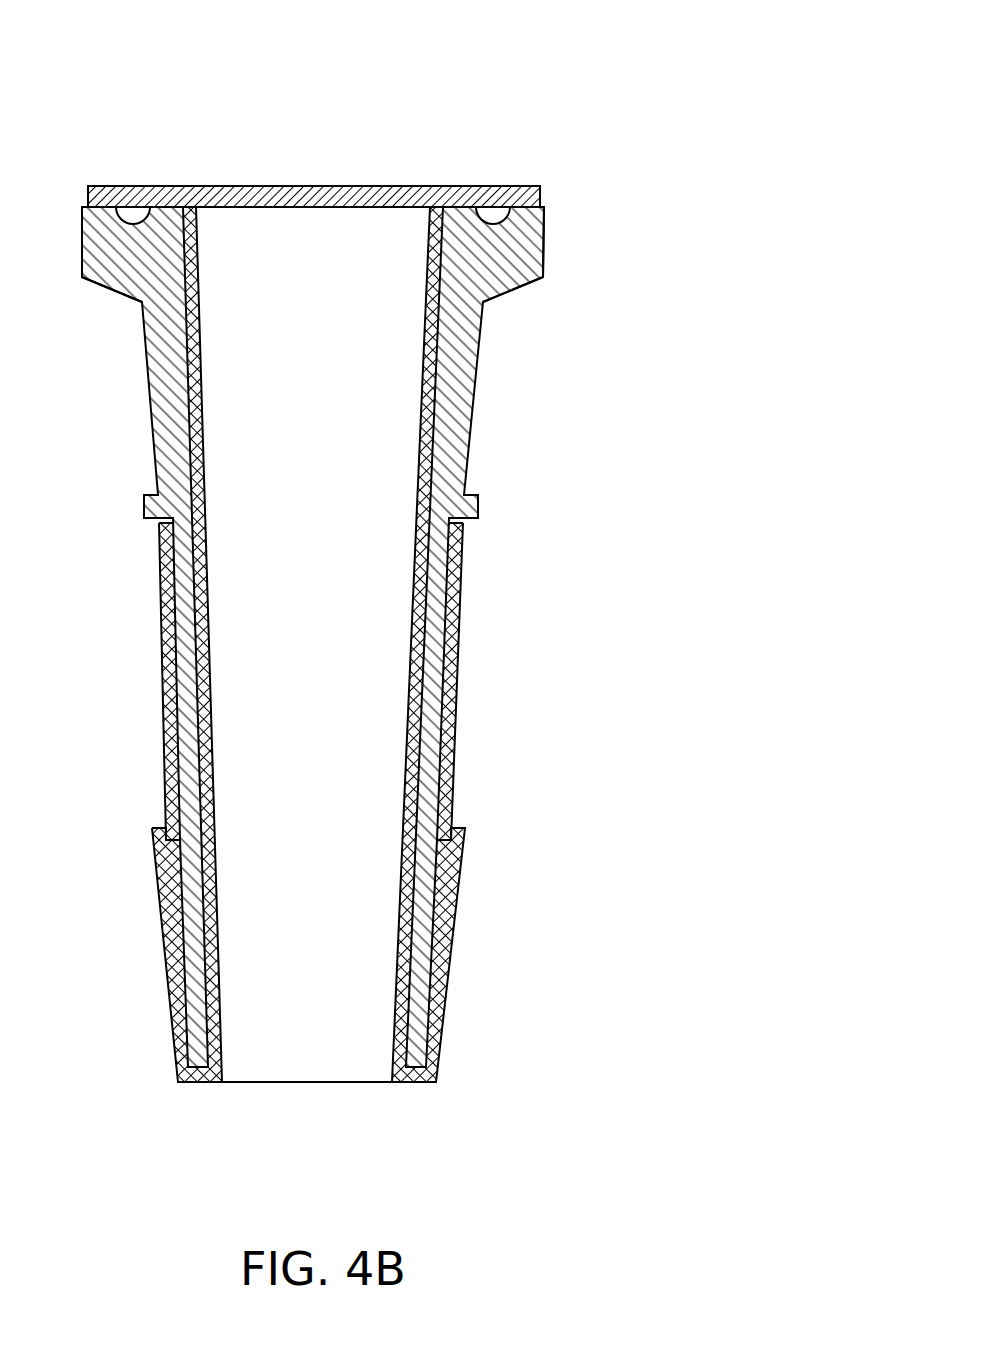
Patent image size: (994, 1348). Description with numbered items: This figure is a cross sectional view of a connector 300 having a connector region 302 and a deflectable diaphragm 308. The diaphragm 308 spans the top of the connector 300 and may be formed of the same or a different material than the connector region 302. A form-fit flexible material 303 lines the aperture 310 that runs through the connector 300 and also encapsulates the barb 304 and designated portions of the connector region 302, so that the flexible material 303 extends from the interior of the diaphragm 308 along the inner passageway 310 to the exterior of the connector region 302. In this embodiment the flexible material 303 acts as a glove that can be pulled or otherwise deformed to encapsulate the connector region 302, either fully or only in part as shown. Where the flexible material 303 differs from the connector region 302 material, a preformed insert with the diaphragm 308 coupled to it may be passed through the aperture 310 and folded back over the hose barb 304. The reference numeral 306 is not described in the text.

The connector 300 is at (530, 83).
The connector region 302 is at (473, 420).
The flexible material 303 is at (461, 595).
The barb 304 is at (423, 937).
The head portion of nozzle body 306 is at (544, 265).
The diaphragm 308 is at (235, 188).
The aperture 310 is at (205, 977).